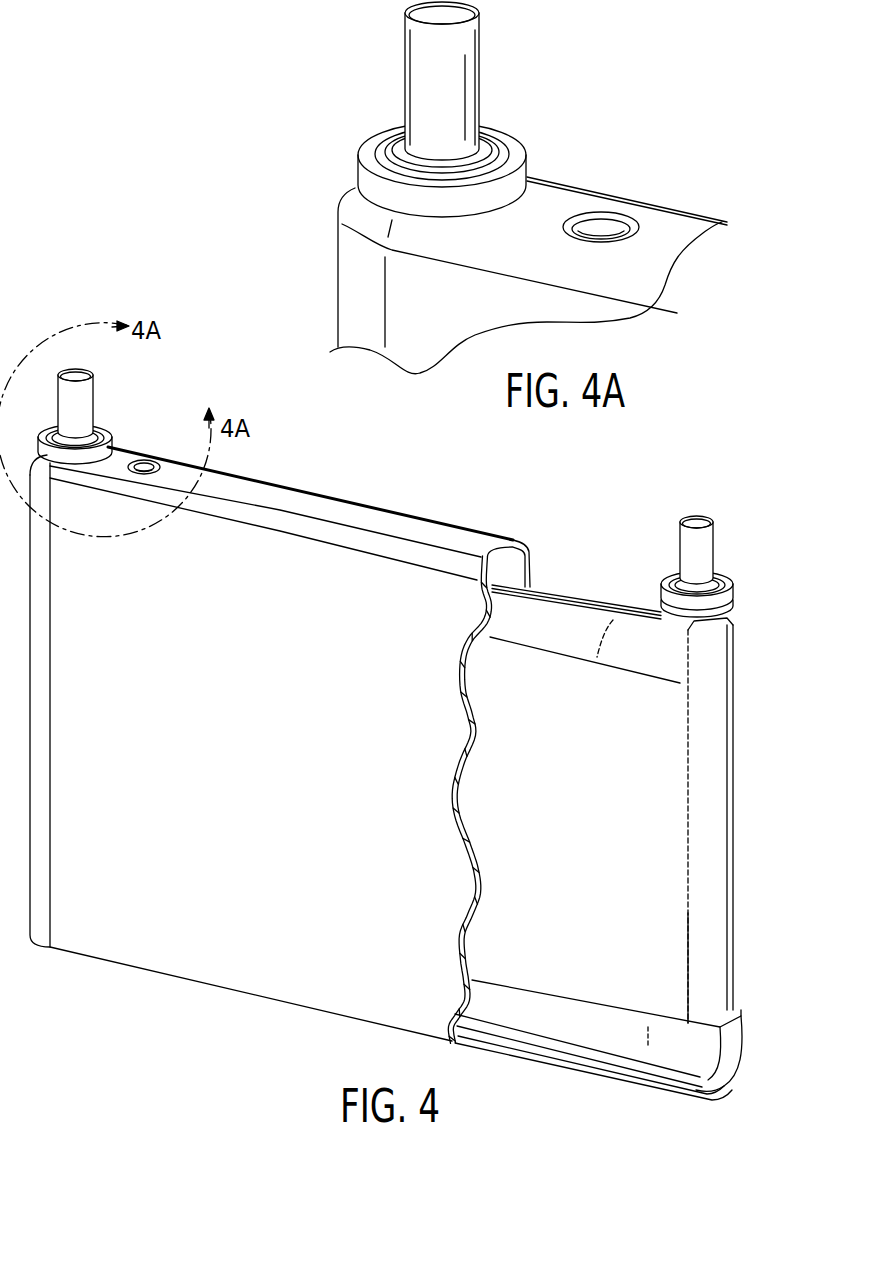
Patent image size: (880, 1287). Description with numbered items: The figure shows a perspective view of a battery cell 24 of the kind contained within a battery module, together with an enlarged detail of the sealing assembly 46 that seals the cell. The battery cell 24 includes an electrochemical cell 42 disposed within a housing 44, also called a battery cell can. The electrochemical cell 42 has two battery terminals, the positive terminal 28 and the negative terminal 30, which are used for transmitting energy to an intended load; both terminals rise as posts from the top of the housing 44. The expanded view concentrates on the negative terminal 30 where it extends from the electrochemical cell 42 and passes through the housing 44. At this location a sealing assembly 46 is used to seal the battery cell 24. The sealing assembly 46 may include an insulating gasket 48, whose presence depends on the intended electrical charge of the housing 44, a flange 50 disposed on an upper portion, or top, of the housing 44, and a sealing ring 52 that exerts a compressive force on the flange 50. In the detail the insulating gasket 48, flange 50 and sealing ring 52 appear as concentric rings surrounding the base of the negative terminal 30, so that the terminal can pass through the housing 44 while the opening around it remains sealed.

In FIG. 4, the battery cell 24 is at (751, 676).
In FIG. 4, the positive terminal 28 is at (696, 520).
In FIG. 4, the negative terminal 30 is at (73, 371).
In FIG. 4, the electrochemical cell 42 is at (565, 950).
In FIG. 4, the housing 44 is at (197, 957).
In FIG. 4A, the sealing assembly 46 is at (511, 188).
In FIG. 4A, the insulating gasket 48 is at (485, 143).
In FIG. 4A, the flange 50 is at (499, 152).
In FIG. 4A, the sealing ring 52 is at (520, 153).